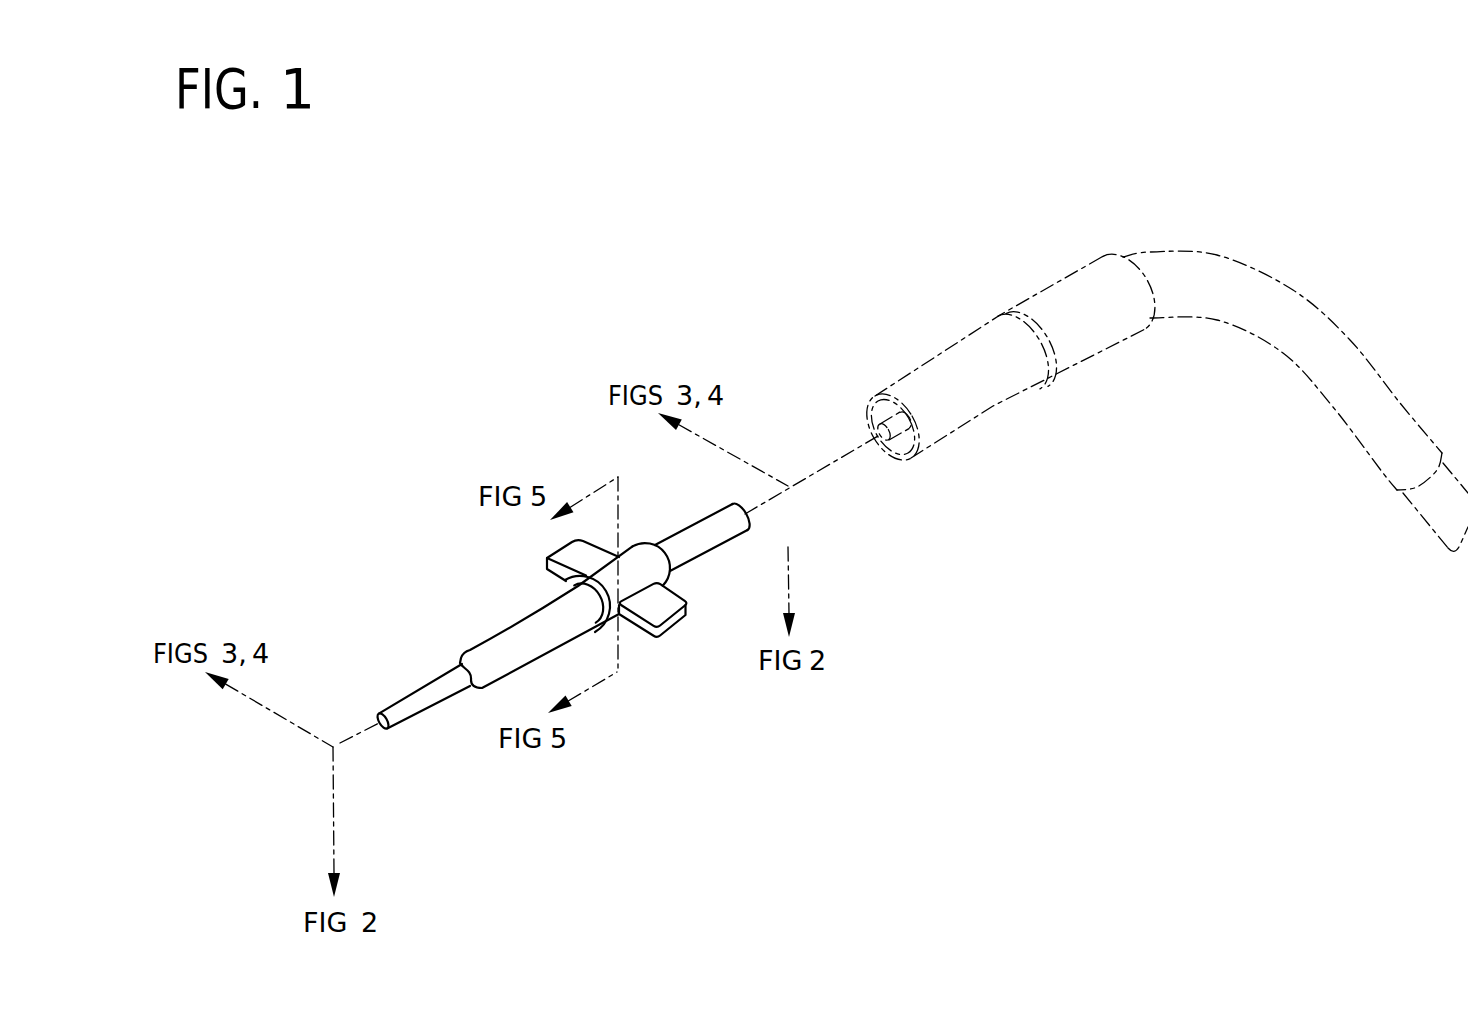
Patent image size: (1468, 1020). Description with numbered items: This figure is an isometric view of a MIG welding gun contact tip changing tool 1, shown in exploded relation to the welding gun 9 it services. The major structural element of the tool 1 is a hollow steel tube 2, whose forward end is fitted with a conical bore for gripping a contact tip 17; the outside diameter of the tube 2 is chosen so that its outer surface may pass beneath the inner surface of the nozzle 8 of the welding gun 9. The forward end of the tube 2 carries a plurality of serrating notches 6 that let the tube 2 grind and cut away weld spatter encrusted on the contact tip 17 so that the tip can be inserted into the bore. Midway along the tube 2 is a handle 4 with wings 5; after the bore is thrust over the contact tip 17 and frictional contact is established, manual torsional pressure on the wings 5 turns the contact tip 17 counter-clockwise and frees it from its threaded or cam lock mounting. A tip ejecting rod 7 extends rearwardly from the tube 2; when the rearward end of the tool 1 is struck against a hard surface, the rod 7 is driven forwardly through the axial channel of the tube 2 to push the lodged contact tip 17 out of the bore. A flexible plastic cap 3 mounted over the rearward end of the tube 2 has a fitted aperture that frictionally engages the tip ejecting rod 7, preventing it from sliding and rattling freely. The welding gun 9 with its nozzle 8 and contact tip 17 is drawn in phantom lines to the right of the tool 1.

The MIG welding gun contact tip changing tool 1 is at (630, 660).
The hollow steel tube 2 is at (770, 637).
The flexible plastic cap 3 is at (505, 660).
The handle 4 is at (604, 585).
The wings 5 is at (665, 607).
The serrating notches 6 is at (738, 507).
The tip ejecting rod 7 is at (413, 703).
The nozzle 8 is at (1012, 425).
The welding gun 9 is at (1307, 343).
The contact tip 17 is at (898, 437).